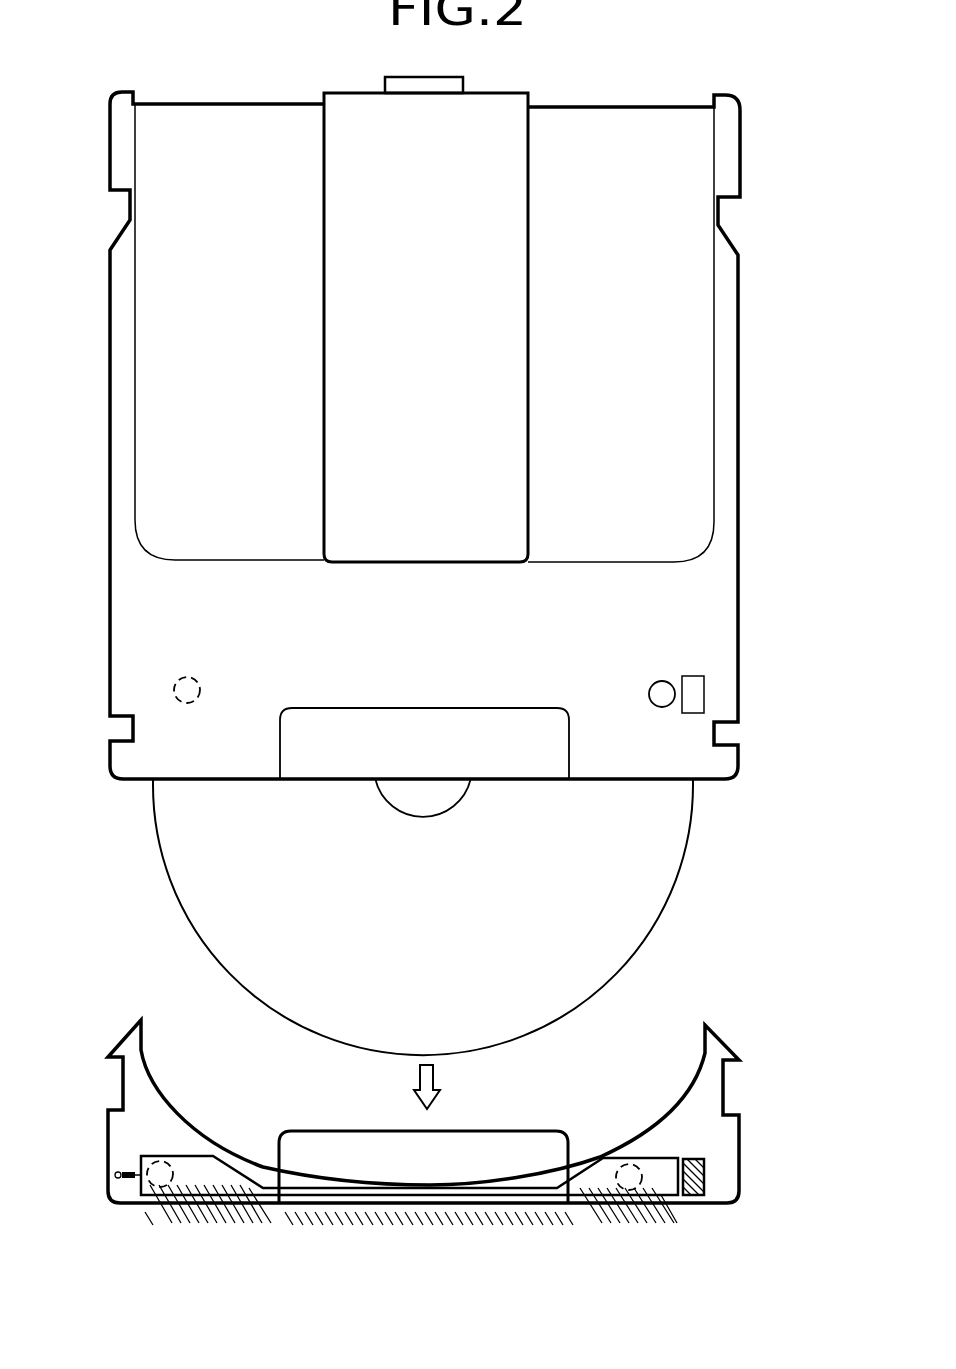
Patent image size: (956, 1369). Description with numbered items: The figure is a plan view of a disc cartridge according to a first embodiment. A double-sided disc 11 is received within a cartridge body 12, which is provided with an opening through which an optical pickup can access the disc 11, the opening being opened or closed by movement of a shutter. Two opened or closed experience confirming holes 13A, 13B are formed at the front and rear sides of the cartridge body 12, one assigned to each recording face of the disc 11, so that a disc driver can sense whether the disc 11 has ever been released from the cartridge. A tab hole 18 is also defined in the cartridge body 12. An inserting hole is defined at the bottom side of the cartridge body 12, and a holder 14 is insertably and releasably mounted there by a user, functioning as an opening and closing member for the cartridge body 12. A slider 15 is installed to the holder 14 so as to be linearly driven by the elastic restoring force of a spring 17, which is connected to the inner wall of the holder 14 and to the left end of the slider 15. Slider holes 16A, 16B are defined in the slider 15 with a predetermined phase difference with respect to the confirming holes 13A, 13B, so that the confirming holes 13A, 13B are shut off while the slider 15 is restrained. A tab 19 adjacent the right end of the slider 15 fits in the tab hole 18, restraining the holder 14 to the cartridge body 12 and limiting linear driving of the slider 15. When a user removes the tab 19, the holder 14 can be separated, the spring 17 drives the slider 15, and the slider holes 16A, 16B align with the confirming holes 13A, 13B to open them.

The disc 11 is at (652, 906).
The cartridge body 12 is at (740, 293).
The opened or closed experience confirming hole 13A is at (662, 694).
The opened or closed experience confirming hole 13B is at (178, 683).
The holder 14 is at (739, 1128).
The slider 15 is at (592, 1185).
The slider hole 16A is at (640, 1183).
The slider hole 16B is at (175, 1183).
The spring 17 is at (116, 1178).
The tab hole 18 is at (695, 696).
The tab 19 is at (703, 1188).